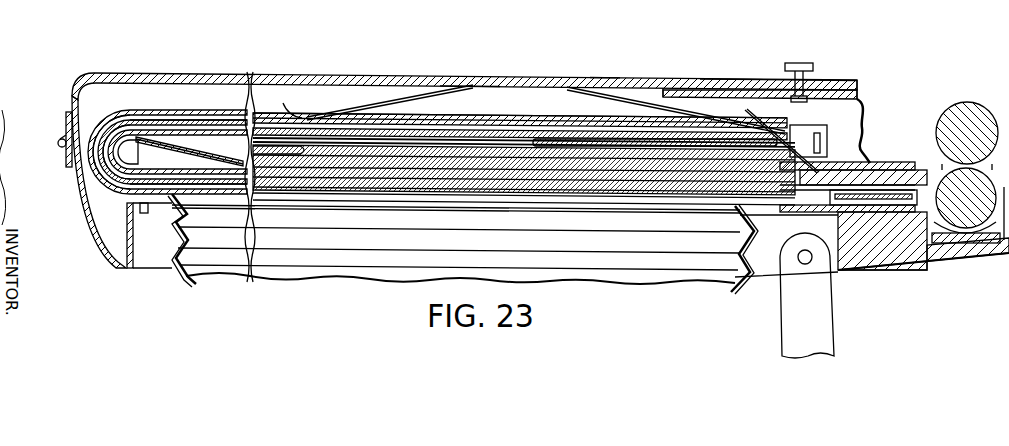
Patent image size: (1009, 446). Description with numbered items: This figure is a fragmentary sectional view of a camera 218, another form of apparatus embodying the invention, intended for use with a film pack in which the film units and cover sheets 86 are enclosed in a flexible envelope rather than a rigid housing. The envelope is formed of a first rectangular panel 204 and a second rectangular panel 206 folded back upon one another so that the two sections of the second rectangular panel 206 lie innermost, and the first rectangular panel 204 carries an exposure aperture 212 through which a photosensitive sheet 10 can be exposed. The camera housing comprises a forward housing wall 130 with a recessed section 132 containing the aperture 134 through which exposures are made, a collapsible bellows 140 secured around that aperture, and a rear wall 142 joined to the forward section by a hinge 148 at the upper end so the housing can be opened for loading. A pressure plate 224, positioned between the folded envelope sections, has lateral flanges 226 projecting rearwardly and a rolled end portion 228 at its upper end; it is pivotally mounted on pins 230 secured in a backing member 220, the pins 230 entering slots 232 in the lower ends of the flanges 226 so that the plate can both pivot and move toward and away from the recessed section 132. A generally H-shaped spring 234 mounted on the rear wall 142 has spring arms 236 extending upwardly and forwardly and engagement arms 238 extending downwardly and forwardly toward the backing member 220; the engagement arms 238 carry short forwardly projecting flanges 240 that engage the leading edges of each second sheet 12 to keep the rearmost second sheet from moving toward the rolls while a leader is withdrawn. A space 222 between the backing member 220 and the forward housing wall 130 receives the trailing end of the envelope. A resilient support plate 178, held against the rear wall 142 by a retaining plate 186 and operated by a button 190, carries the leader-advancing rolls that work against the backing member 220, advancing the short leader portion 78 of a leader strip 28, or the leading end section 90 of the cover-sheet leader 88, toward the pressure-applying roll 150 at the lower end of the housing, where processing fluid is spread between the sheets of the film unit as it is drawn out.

The photosensitive sheet 10 is at (493, 184).
The second sheet 12 is at (577, 130).
The leader strip 28 is at (302, 157).
The short leader portion 78 is at (903, 172).
The cover sheets 86 is at (420, 194).
The leader 88 is at (191, 156).
The leading end section 90 is at (890, 175).
The forward housing wall 130 is at (110, 270).
The recessed section 132 is at (150, 204).
The aperture 134 is at (178, 201).
The collapsible bellows 140 is at (213, 279).
The rear wall 142 is at (522, 80).
The hinge 148 is at (60, 142).
The pressure-applying roll 150 is at (963, 110).
The support plate 178 is at (730, 87).
The retaining plate 186 is at (653, 83).
The button 190 is at (792, 62).
The first rectangular panel 204 is at (113, 198).
The second rectangular panel 206 is at (148, 135).
The exposure aperture 212 is at (173, 195).
The camera 218 is at (604, 66).
The backing member 220 is at (893, 166).
The space 222 is at (888, 200).
The pressure plate 224 is at (353, 168).
The lateral flanges 226 is at (200, 147).
The rolled end portion 228 is at (122, 134).
The pins 230 is at (877, 163).
The slots 232 is at (860, 157).
The spring 234 is at (473, 80).
The spring arms 236 is at (347, 107).
The engagement arms 238 is at (632, 97).
The flanges 240 is at (790, 127).